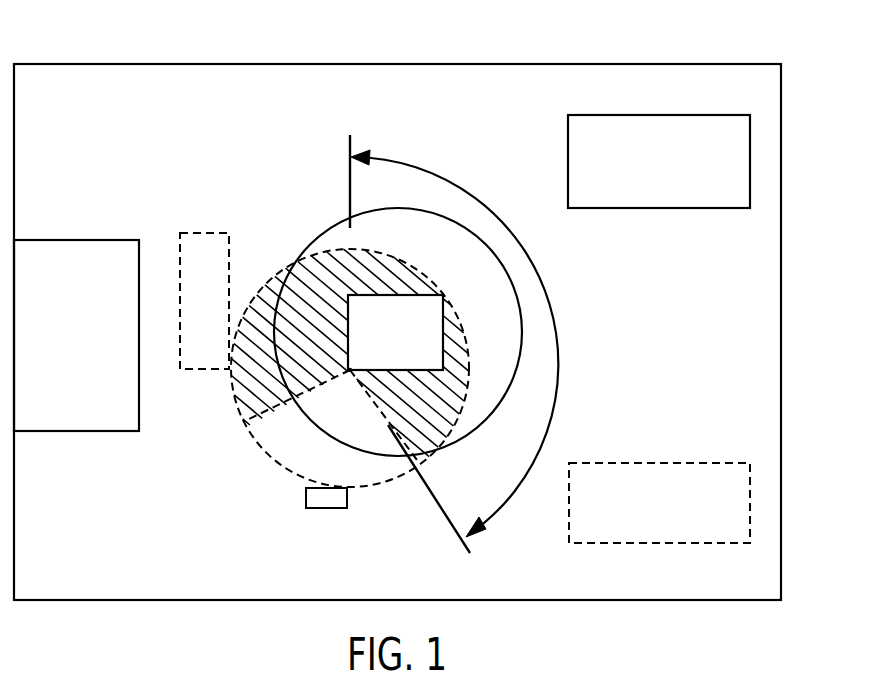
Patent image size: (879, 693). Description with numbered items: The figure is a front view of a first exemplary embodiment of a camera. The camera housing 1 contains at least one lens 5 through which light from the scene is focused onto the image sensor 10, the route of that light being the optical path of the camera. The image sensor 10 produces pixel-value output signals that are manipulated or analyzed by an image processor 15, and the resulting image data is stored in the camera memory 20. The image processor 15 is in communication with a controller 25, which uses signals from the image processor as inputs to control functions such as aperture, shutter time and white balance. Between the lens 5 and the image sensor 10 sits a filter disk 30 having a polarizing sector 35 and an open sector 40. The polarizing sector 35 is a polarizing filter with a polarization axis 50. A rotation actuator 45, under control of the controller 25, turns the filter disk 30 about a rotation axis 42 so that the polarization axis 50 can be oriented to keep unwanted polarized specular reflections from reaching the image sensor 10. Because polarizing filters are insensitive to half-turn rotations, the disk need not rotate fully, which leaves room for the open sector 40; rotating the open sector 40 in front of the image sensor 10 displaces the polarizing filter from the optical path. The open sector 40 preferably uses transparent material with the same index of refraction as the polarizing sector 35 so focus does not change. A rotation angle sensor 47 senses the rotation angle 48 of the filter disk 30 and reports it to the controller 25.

The camera housing 1 is at (632, 64).
The lens 5 is at (333, 229).
The image sensor 10 is at (440, 310).
The image processor 15 is at (750, 158).
The camera memory 20 is at (70, 240).
The controller 25 is at (750, 503).
The filter disk 30 is at (245, 421).
The polarizing sector 35 is at (450, 395).
The open sector 40 is at (288, 440).
The rotation axis 42 is at (349, 373).
The rotation actuator 45 is at (205, 233).
The rotation angle sensor 47 is at (325, 508).
The rotation angle 48 is at (553, 305).
The polarization axis 50 is at (434, 493).